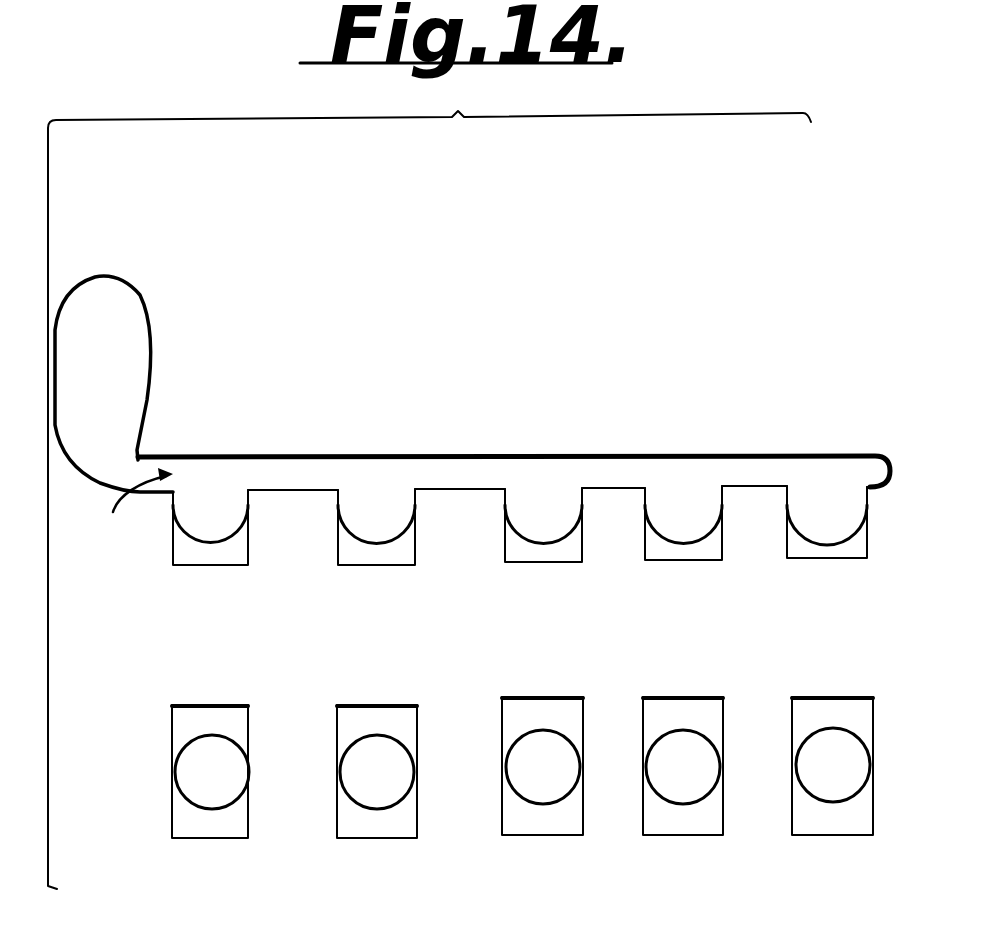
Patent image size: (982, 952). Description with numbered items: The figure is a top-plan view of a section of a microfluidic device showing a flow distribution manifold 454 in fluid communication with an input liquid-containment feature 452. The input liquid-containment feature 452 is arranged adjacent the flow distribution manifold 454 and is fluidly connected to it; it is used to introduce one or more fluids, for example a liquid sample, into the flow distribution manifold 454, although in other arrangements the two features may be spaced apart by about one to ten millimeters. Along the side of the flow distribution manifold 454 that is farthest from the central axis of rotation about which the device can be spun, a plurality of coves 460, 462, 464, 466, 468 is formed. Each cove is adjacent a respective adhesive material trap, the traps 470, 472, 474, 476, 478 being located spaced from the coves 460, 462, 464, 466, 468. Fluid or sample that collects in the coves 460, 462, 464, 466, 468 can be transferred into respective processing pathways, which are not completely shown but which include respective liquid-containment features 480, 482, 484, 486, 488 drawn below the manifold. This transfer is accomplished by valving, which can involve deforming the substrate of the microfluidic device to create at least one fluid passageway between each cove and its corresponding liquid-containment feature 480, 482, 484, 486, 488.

The input liquid-containment feature 452 is at (148, 333).
The flow distribution manifold 454 is at (117, 510).
The cove 460 is at (225, 530).
The cove 462 is at (398, 528).
The cove 464 is at (560, 527).
The cove 466 is at (718, 507).
The cove 468 is at (864, 518).
The adhesive material trap 470 is at (190, 552).
The adhesive material trap 472 is at (357, 552).
The adhesive material trap 474 is at (547, 545).
The adhesive material trap 476 is at (692, 548).
The adhesive material trap 478 is at (842, 545).
The liquid-containment feature 480 is at (175, 800).
The liquid-containment feature 482 is at (340, 800).
The liquid-containment feature 484 is at (508, 802).
The liquid-containment feature 486 is at (650, 800).
The liquid-containment feature 488 is at (797, 800).